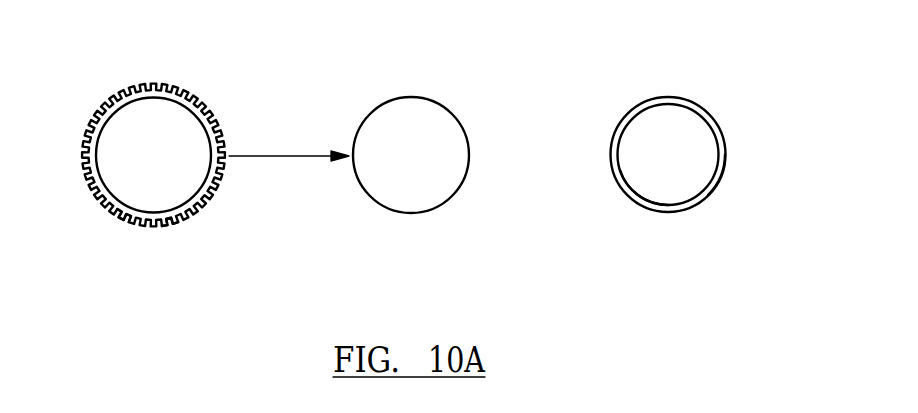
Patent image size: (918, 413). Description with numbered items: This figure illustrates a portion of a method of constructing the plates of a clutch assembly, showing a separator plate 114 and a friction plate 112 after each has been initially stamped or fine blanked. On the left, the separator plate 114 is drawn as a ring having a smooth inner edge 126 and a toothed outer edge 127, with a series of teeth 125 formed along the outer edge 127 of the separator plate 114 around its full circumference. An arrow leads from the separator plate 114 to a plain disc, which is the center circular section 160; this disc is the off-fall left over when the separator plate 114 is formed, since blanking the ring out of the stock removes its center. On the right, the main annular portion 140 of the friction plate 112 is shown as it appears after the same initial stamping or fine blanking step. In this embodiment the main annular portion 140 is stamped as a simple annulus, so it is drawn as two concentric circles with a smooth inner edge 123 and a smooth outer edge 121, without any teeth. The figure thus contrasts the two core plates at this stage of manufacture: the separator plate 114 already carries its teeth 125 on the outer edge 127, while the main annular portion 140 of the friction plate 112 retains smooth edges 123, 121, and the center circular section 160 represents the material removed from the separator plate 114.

The separator plate 114 is at (113, 60).
The smooth inner edge 126 is at (110, 207).
The teeth 125 is at (137, 228).
The toothed outer edge 127 is at (170, 228).
The center circular section 160 is at (412, 133).
The friction plate 112 is at (771, 68).
The main annular portion 140 is at (692, 107).
The outer edge 121 is at (727, 153).
The inner edge 123 is at (642, 202).